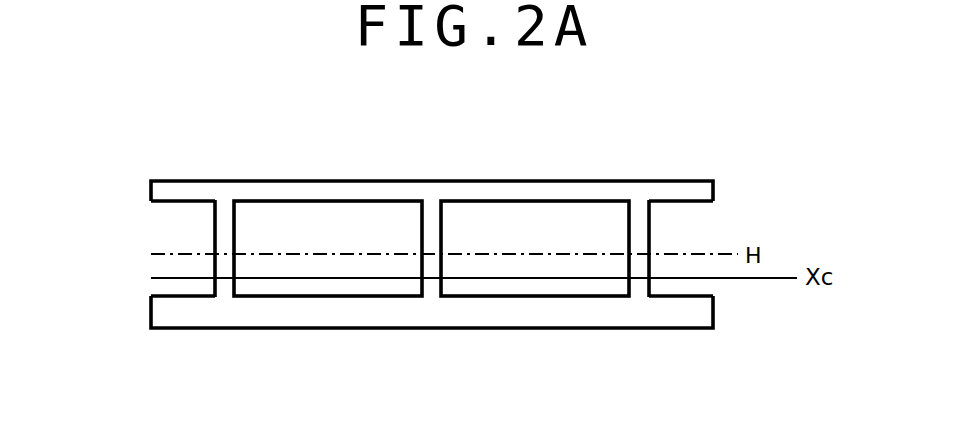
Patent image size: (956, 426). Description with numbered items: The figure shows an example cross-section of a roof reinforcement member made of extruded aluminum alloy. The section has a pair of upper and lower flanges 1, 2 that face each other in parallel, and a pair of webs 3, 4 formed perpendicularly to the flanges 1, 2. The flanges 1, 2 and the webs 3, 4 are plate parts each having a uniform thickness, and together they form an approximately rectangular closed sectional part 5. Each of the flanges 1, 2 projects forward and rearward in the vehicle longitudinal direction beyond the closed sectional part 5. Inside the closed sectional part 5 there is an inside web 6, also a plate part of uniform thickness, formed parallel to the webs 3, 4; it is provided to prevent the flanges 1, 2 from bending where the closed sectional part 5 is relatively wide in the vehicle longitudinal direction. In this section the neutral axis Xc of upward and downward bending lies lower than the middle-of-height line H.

The upper flange 1 is at (350, 193).
The lower flange 2 is at (397, 315).
The web 3 is at (222, 229).
The web 4 is at (641, 228).
The closed sectional part 5 is at (546, 180).
The inside web 6 is at (432, 230).